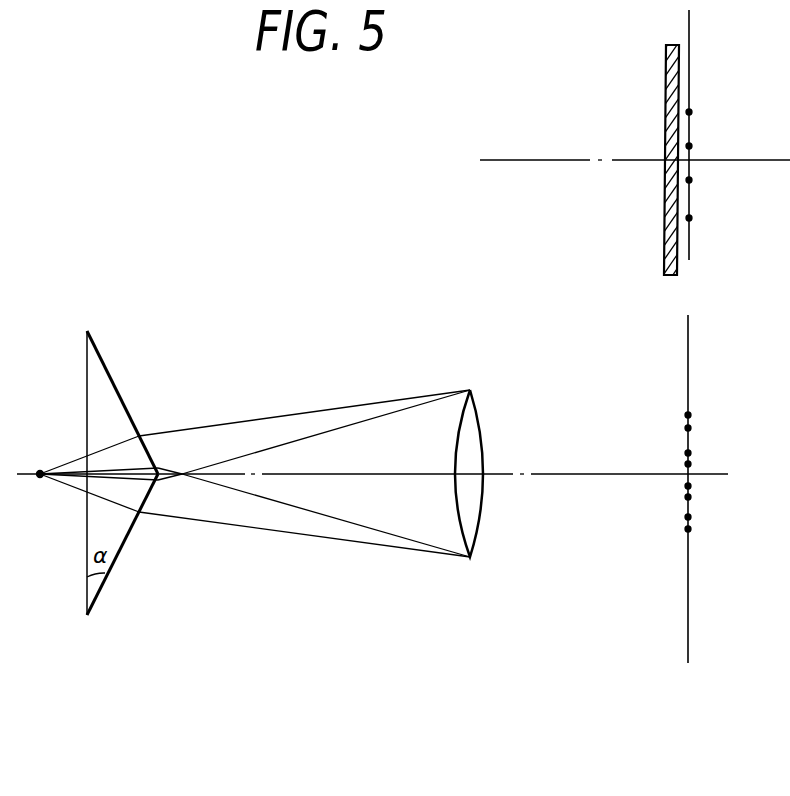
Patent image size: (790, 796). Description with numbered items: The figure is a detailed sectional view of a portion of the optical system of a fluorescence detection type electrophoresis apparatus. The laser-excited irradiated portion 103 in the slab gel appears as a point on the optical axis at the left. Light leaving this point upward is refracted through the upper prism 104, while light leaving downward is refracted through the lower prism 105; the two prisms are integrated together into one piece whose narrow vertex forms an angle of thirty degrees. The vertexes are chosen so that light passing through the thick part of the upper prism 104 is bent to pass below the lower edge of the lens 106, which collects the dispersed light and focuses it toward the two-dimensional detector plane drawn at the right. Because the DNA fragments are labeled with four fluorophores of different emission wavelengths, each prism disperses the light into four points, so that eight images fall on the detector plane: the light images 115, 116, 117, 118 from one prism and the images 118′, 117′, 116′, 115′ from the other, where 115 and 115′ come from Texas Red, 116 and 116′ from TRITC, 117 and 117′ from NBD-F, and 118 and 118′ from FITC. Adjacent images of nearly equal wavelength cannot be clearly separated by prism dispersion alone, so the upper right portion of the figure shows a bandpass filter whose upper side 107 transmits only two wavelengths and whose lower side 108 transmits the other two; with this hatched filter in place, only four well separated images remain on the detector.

The irradiated portion 103 is at (39, 470).
The upper prism 104 is at (118, 407).
The lower prism 105 is at (118, 533).
The lens 106 is at (470, 425).
The upper side of bandpass filter 107 is at (665, 52).
The lower side of bandpass filter 108 is at (664, 225).
The light image of Texas Red 115 is at (688, 415).
The light image of TRITC 116 is at (688, 428).
The light image of NBD-F 117 is at (688, 453).
The light image of FITC 118 is at (688, 464).
The light image of FITC 118′ is at (688, 486).
The light image of NBD-F 117′ is at (688, 497).
The light image of TRITC 116′ is at (688, 517).
The light image of Texas Red 115′ is at (688, 529).